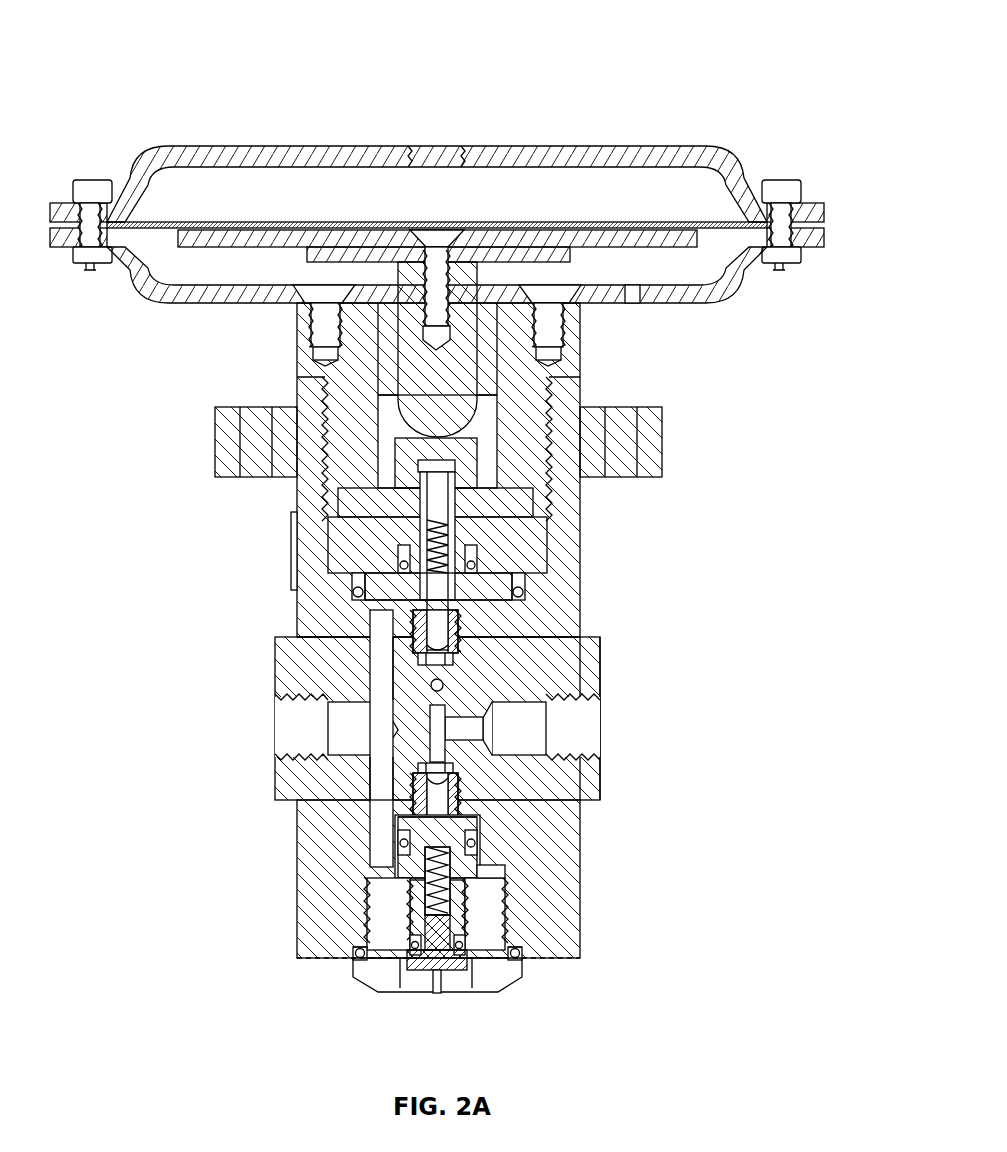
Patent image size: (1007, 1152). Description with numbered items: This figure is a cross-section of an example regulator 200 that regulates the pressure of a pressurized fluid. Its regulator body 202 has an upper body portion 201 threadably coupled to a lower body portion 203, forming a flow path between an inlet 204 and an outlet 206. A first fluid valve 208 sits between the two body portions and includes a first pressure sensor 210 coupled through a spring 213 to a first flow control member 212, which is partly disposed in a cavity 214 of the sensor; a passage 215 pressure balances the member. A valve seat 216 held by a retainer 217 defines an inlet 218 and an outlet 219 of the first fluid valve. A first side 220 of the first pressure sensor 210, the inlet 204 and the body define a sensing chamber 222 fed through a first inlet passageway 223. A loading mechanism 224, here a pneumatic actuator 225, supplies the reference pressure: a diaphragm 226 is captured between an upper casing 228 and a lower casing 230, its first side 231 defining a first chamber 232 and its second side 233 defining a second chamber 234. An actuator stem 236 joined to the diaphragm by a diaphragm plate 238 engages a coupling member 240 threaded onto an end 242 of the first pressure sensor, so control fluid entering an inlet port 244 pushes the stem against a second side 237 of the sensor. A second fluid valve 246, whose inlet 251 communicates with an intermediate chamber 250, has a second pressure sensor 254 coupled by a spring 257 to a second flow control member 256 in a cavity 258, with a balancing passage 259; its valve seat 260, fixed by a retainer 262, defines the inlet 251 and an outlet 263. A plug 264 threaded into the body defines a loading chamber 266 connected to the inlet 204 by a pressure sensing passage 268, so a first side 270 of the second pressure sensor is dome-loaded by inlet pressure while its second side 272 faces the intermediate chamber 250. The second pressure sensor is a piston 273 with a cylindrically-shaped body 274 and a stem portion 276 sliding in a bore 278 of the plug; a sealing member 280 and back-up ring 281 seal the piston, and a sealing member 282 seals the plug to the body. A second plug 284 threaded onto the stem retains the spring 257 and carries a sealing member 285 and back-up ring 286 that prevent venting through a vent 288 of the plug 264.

The regulator 200 is at (429, 545).
The upper body portion 201 is at (568, 372).
The regulator body 202 is at (582, 803).
The lower body portion 203 is at (580, 483).
The inlet 204 is at (275, 705).
The outlet 206 is at (600, 740).
The first fluid valve 208 is at (460, 560).
The first pressure sensor 210 is at (557, 600).
The first flow control member 212 is at (460, 650).
The spring 213 is at (412, 518).
The cavity 214 is at (540, 580).
The passage 215 is at (385, 600).
The valve seat 216 is at (455, 660).
The retainer 217 is at (380, 676).
The inlet 218 is at (412, 640).
The outlet 219 is at (443, 682).
The first side 220 is at (460, 613).
The sensing chamber 222 is at (370, 607).
The first inlet passageway 223 is at (362, 690).
The loading mechanism 224 is at (437, 233).
The actuator 225 is at (135, 296).
The diaphragm 226 is at (712, 226).
The upper casing 228 is at (585, 146).
The lower casing 230 is at (685, 303).
The first side 231 is at (585, 222).
The first chamber 232 is at (437, 188).
The second side 233 is at (742, 250).
The second chamber 234 is at (392, 262).
The actuator stem 236 is at (415, 388).
The second side 237 is at (497, 538).
The diaphragm plate 238 is at (205, 230).
The coupling member 240 is at (405, 455).
The end 242 is at (470, 478).
The inlet port 244 is at (462, 146).
The second fluid valve 246 is at (588, 762).
The intermediate chamber 250 is at (480, 850).
The inlet 251 is at (378, 772).
The second pressure sensor 254 is at (490, 902).
The second flow control member 256 is at (490, 820).
The spring 257 is at (522, 950).
The cavity 258 is at (400, 897).
The passage 259 is at (485, 893).
The valve seat 260 is at (598, 788).
The retainer 262 is at (478, 812).
The outlet 263 is at (450, 728).
The plug 264 is at (502, 990).
The loading chamber 266 is at (518, 925).
The pressure sensing passage 268 is at (372, 772).
The first side 270 is at (385, 893).
The second side 272 is at (400, 806).
The piston 273 is at (437, 881).
The cylindrically-shaped body 274 is at (450, 862).
The stem portion 276 is at (410, 935).
The bore 278 is at (396, 973).
The sealing member 280 is at (400, 840).
The back-up ring 281 is at (420, 845).
The sealing member 282 is at (516, 950).
The second plug 284 is at (430, 965).
The sealing member 285 is at (352, 955).
The back-up ring 286 is at (362, 965).
The vent 288 is at (439, 985).